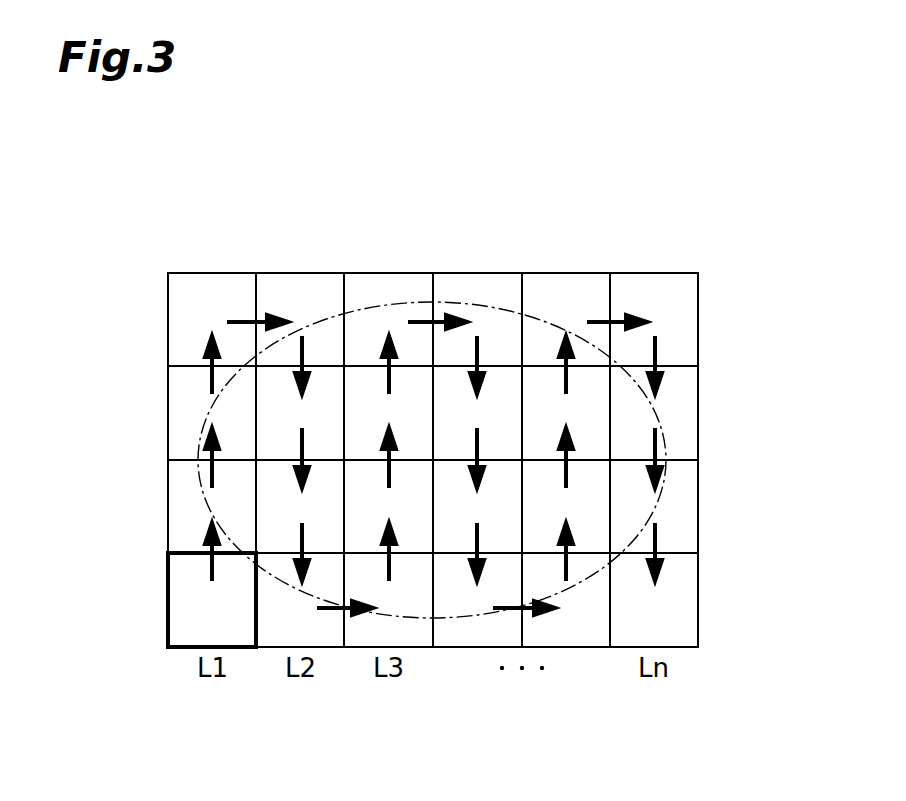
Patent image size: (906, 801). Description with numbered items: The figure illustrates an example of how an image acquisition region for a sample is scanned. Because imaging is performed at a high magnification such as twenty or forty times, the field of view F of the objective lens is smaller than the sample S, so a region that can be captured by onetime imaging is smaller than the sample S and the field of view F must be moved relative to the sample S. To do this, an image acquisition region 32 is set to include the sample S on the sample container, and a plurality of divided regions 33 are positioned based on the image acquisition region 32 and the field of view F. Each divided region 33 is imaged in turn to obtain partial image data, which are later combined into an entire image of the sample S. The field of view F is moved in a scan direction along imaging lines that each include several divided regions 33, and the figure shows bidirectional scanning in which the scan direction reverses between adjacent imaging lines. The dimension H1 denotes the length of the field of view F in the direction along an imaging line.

The image acquisition region 32 is at (150, 266).
The divided region 33 is at (688, 325).
The sample S is at (393, 304).
The field of view F is at (182, 648).
The length of the field of view along an imaging line H1 is at (168, 553).